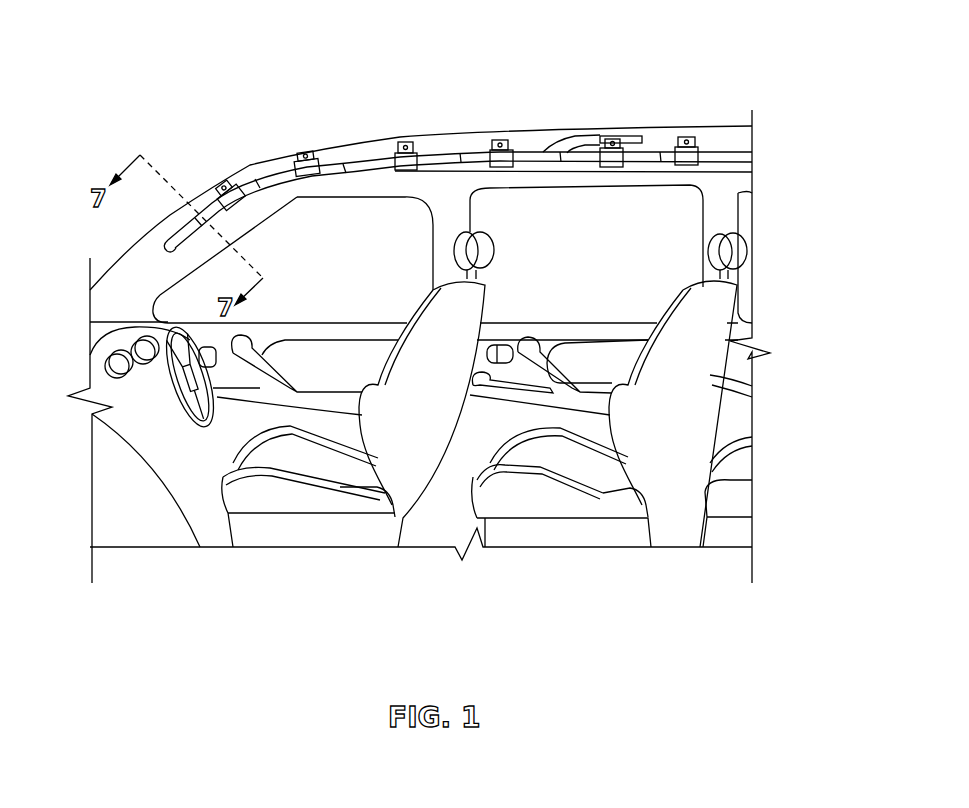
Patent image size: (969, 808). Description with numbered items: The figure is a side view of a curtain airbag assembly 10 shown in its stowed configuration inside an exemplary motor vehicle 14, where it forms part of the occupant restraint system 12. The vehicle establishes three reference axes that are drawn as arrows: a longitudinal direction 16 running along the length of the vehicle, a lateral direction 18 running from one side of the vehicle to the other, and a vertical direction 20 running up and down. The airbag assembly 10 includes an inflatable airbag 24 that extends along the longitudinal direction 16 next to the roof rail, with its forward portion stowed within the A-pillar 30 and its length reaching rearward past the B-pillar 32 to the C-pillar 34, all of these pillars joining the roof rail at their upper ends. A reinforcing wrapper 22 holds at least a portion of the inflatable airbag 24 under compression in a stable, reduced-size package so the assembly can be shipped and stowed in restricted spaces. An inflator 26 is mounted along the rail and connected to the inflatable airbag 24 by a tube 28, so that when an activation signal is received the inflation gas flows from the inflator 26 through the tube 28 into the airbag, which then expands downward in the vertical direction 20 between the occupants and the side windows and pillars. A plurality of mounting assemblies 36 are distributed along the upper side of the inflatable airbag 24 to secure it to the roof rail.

The airbag assembly 10 is at (439, 158).
The occupant restraint system 12 is at (748, 90).
The motor vehicle 14 is at (125, 252).
The longitudinal direction 16 is at (525, 603).
The lateral direction 18 is at (457, 413).
The vertical direction 20 is at (801, 432).
The reinforcing wrapper 22 is at (173, 229).
The inflatable airbag 24 is at (343, 170).
The inflator 26 is at (627, 137).
The tube 28 is at (563, 140).
The A-pillar 30 is at (170, 258).
The B-pillar 32 is at (467, 203).
The C-pillar 34 is at (712, 207).
The mounting assemblies 36 is at (223, 182).